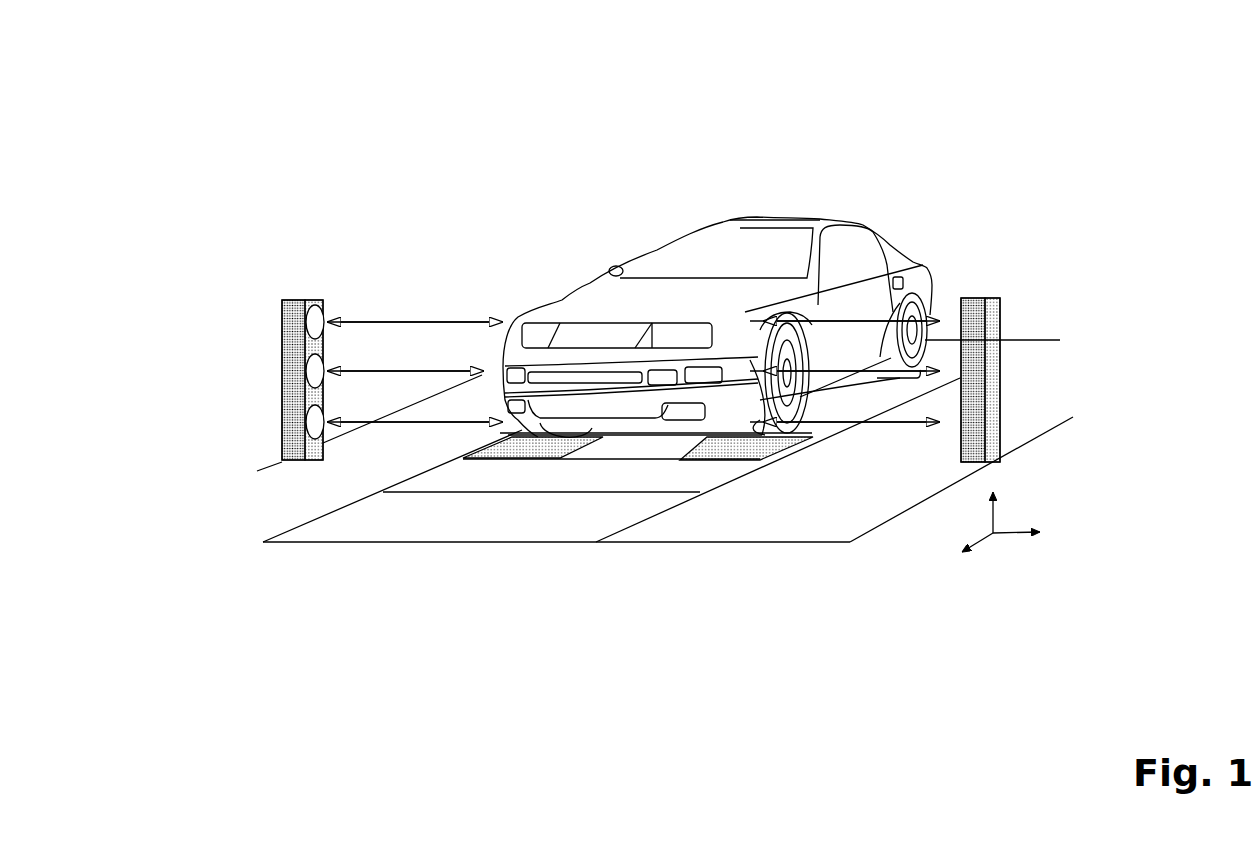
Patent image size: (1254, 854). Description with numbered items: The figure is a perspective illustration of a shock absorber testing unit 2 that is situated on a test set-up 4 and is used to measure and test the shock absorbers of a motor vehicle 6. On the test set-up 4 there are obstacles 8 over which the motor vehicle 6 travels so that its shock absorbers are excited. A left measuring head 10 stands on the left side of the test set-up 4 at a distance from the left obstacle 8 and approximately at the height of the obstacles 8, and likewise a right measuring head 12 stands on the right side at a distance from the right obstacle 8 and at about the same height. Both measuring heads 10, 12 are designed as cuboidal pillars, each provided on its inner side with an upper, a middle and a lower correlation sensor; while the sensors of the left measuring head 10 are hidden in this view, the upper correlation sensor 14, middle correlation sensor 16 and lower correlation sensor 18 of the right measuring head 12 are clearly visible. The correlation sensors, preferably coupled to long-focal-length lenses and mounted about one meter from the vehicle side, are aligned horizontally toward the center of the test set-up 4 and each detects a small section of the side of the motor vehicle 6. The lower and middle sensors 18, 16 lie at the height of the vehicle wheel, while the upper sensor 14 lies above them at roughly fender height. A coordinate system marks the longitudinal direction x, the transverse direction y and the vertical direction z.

The shock absorber testing unit 2 is at (331, 147).
The test set-up 4 is at (567, 516).
The motor vehicle 6 is at (921, 264).
The obstacles 8 is at (465, 452).
The left measuring head 10 is at (1020, 300).
The right measuring head 12 is at (259, 296).
The upper correlation sensor 14 is at (328, 307).
The middle correlation sensor 16 is at (322, 356).
The lower correlation sensor 18 is at (322, 405).